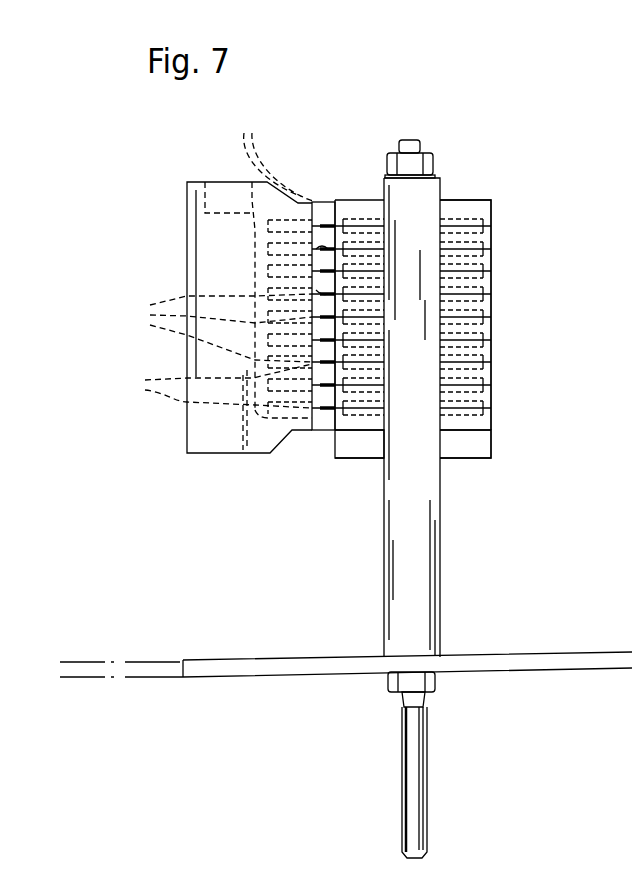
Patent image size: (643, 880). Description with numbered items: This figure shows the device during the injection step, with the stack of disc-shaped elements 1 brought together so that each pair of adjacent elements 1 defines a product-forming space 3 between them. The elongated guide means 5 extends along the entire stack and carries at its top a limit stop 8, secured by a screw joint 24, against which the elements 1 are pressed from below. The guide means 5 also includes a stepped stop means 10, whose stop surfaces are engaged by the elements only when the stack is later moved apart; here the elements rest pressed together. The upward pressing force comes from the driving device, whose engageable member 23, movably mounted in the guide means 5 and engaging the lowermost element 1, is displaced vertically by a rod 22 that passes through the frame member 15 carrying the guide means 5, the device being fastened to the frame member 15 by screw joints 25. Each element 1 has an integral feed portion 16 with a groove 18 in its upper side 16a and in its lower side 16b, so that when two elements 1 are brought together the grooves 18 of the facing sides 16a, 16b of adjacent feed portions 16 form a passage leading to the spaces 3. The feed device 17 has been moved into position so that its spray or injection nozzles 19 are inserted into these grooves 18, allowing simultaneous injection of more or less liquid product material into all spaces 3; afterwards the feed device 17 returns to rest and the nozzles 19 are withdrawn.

The element 1 is at (495, 198).
The product-forming space 3 is at (368, 220).
The guide means 5 is at (450, 182).
The limit stop 8 is at (422, 188).
The stop means 10 is at (398, 535).
The frame member 15 is at (515, 671).
The feed portion 16 is at (312, 435).
The upper side of the feed portion 16a is at (323, 202).
The lower side of the feed portion 16b is at (316, 249).
The feed device 17 is at (183, 440).
The groove 18 is at (216, 259).
The spray or injection nozzle 19 is at (214, 328).
The rod 22 is at (415, 752).
The engageable member 23 is at (474, 443).
The screw joint 24 is at (418, 153).
The screw joint 25 is at (388, 680).